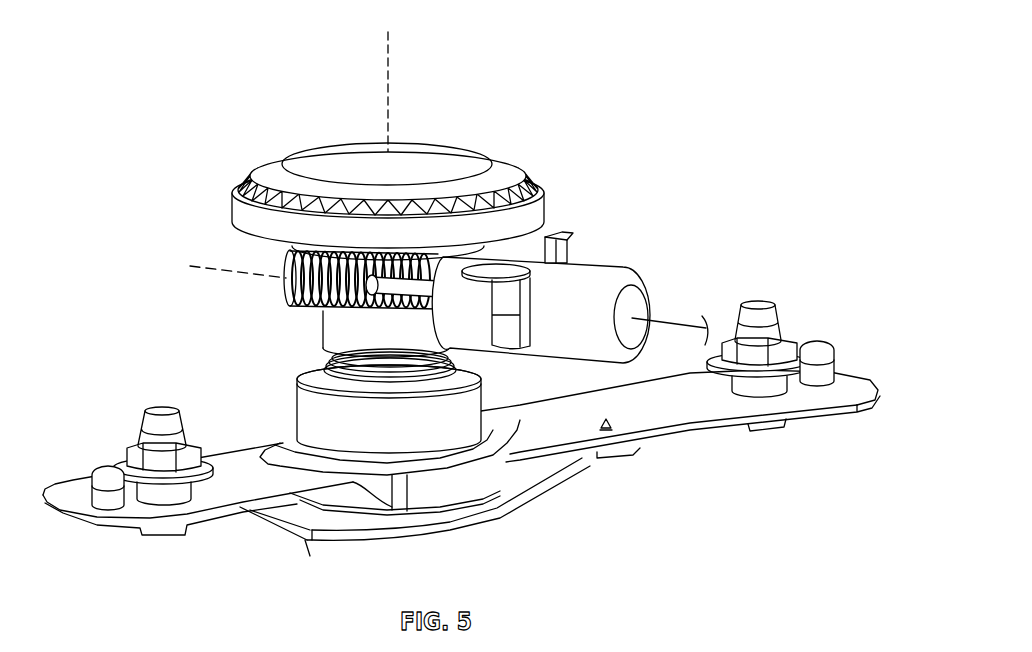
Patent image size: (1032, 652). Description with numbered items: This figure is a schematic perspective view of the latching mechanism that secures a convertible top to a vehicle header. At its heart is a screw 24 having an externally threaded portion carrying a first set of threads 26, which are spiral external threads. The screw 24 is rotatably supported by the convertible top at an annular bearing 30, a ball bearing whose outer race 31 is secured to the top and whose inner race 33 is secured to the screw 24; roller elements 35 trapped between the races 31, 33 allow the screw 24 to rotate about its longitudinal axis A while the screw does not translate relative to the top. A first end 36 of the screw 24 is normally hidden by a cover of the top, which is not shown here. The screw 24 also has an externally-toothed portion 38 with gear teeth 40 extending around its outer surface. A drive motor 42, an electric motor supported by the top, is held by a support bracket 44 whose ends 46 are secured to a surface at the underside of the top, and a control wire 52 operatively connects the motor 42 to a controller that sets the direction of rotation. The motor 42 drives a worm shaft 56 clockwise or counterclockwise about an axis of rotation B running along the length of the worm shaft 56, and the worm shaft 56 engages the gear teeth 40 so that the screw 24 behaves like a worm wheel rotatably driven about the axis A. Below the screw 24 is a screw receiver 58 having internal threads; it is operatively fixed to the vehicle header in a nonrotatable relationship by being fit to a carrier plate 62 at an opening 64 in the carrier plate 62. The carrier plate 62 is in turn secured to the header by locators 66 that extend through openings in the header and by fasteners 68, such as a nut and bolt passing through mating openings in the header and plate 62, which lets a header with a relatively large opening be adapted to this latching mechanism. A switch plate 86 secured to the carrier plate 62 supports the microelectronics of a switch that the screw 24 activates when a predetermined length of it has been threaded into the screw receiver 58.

The screw 24 is at (327, 312).
The first set of threads 26 is at (325, 364).
The annular bearing 30 is at (242, 203).
The outer race 31 is at (240, 181).
The inner race 33 is at (288, 163).
The roller elements 35 is at (254, 180).
The first end 36 is at (442, 151).
The externally-toothed portion 38 is at (408, 294).
The gear teeth 40 is at (392, 292).
The drive motor 42 is at (607, 271).
The support bracket 44 is at (571, 249).
The ends 46 is at (563, 231).
The control wire 52 is at (652, 318).
The worm shaft 56 is at (295, 295).
The screw receiver 58 is at (302, 410).
The carrier plate 62 is at (655, 417).
The opening 64 is at (480, 440).
The locators 66 is at (813, 349).
The fasteners 68 is at (786, 334).
The switch plate 86 is at (312, 548).
The longitudinal axis A is at (388, 72).
The axis of rotation B is at (237, 273).